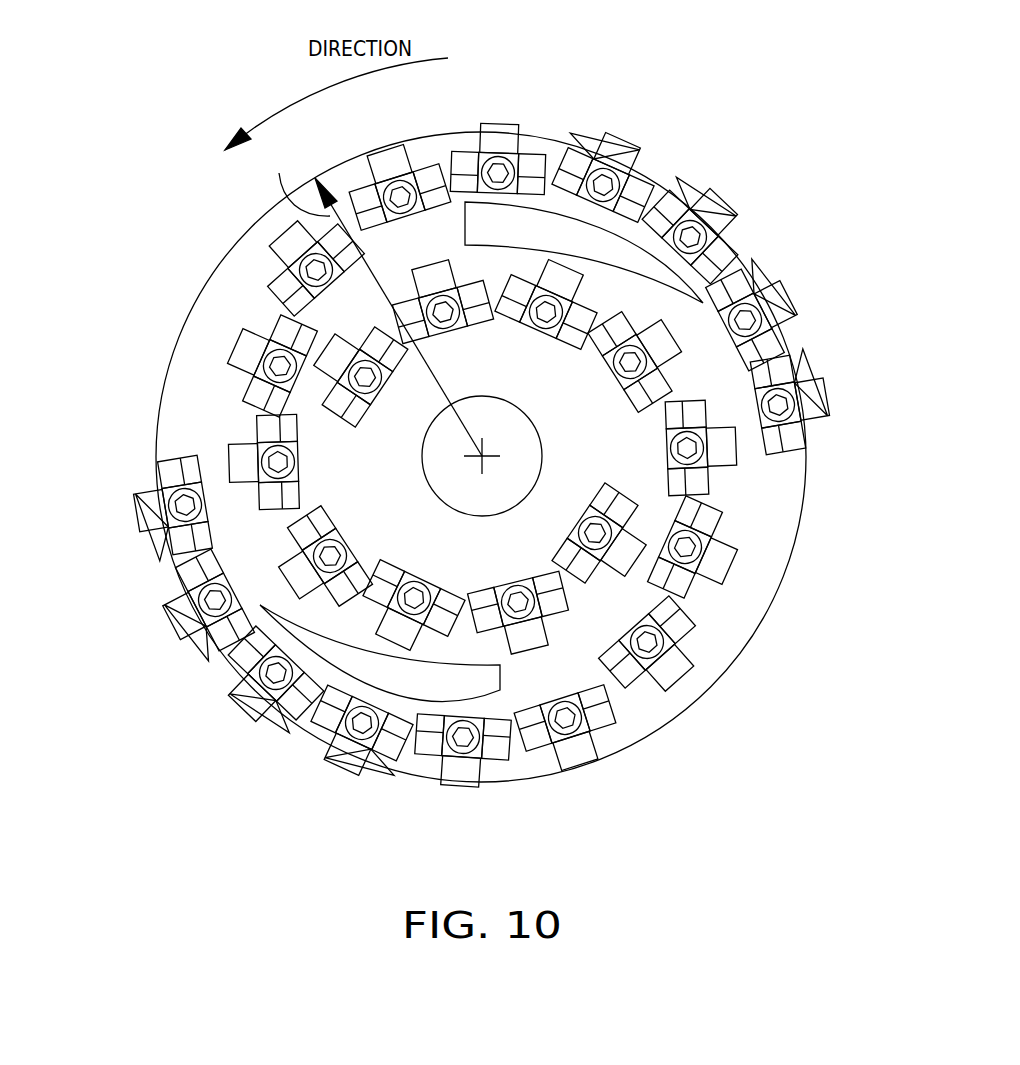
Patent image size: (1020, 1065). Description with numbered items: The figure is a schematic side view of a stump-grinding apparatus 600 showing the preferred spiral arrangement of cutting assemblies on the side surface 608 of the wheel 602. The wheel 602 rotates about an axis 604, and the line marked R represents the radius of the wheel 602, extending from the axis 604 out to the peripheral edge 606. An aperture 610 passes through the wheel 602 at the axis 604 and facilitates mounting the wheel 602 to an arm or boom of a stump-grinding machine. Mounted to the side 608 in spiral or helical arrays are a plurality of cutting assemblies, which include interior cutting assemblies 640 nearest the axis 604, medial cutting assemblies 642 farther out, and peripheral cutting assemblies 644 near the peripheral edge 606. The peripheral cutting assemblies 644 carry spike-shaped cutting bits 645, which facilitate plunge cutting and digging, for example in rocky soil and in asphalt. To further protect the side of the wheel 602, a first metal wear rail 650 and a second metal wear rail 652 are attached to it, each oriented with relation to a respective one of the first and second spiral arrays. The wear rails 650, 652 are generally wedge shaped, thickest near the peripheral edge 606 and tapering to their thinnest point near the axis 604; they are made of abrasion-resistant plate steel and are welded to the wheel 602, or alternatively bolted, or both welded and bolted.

The cutting head assembly 600 is at (491, 472).
The wheel 602 is at (734, 666).
The axis 604 is at (484, 454).
The peripheral edge 606 is at (313, 178).
The side surface 608 is at (429, 543).
The aperture 610 is at (531, 413).
The interior cutting assemblies 640 is at (458, 338).
The medial cutting assemblies 642 is at (466, 788).
The peripheral cutting assemblies 644 is at (637, 145).
The spike-shaped cutting bits 645 is at (600, 125).
The first metal wear rail 650 is at (548, 207).
The second metal wear rail 652 is at (403, 700).